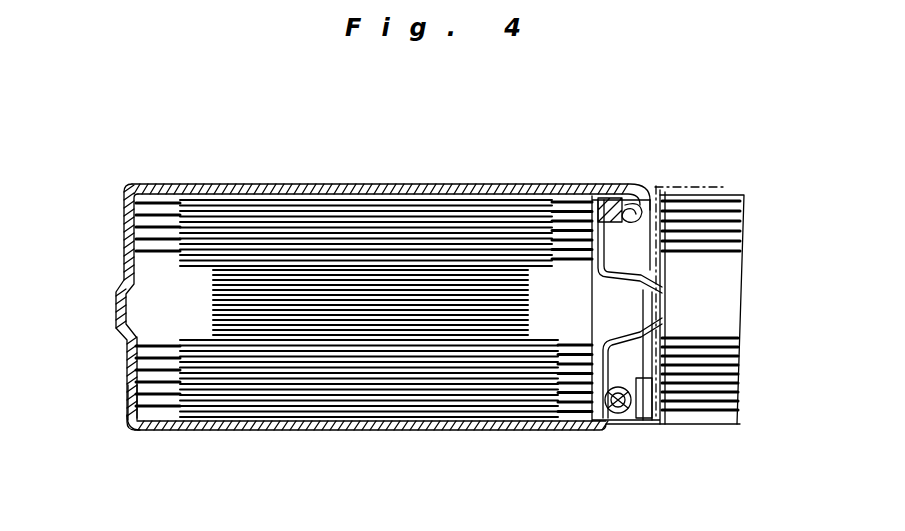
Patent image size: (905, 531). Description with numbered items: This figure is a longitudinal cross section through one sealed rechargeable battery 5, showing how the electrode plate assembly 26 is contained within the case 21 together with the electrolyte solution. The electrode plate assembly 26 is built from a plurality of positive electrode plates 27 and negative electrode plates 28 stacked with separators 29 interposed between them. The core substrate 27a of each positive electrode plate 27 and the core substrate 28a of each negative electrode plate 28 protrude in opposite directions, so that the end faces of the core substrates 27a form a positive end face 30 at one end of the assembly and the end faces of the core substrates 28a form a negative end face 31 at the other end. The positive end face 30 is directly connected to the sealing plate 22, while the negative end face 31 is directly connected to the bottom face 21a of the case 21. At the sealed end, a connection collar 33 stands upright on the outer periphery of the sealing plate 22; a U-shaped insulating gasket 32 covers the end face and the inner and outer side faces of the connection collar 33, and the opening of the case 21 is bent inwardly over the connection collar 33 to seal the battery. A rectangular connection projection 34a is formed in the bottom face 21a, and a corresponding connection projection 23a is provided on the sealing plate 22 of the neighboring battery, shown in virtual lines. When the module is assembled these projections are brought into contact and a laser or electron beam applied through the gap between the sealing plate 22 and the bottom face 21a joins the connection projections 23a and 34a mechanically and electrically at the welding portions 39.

The sealed rechargeable battery 5 is at (207, 184).
The case 21 is at (330, 427).
The bottom face of the case 21a is at (128, 393).
The sealing plate 22 is at (605, 413).
The connection projection 23a is at (643, 288).
The electrode plate assembly 26 is at (268, 186).
The positive electrode plate 27 is at (386, 186).
The core substrate of the positive electrode plate 27a is at (572, 187).
The negative electrode plate 28 is at (336, 186).
The core substrate of the negative electrode plate 28a is at (157, 422).
The separator 29 is at (437, 186).
The positive end face 30 is at (577, 407).
The negative end face 31 is at (130, 423).
The insulating gasket 32 is at (622, 187).
The connection collar 33 is at (600, 187).
The connection projection 34a is at (114, 310).
The welding portion 39 is at (683, 190).